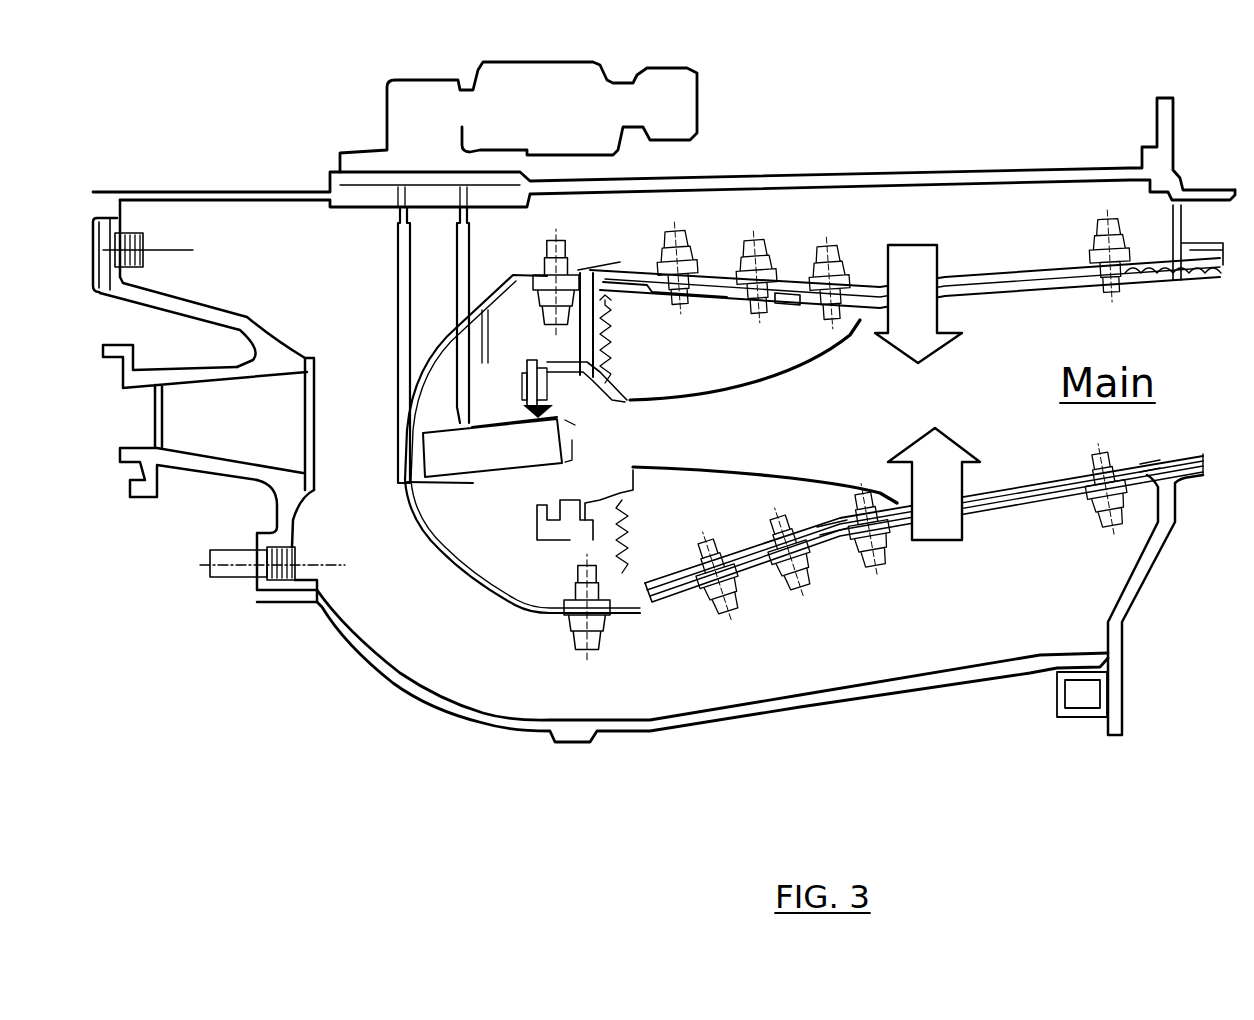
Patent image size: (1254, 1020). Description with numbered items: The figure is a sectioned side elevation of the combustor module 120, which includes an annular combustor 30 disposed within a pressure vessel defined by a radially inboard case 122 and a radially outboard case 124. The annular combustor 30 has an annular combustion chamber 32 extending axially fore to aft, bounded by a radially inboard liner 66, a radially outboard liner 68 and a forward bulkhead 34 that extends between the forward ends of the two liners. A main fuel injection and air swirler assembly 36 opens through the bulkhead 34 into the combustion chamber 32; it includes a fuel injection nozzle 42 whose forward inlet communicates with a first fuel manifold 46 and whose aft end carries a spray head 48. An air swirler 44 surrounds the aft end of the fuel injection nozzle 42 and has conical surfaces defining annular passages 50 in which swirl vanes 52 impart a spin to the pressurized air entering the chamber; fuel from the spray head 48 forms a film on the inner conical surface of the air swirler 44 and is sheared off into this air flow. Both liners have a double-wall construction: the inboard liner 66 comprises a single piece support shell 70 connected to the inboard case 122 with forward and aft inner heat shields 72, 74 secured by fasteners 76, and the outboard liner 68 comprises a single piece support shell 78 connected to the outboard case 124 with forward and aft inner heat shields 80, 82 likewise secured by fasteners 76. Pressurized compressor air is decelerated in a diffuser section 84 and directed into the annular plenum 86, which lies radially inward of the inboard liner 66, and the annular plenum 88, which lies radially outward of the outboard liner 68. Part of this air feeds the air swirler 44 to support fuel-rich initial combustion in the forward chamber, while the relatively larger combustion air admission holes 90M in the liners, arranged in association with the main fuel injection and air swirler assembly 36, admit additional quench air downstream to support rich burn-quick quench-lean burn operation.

The annular combustor 30 is at (1003, 558).
The annular combustion chamber 32 is at (854, 426).
The bulkhead 34 is at (603, 538).
The main fuel injection and air swirler assembly 36 is at (522, 505).
The fuel injection nozzle 42 is at (497, 478).
The air swirler 44 is at (635, 492).
The first fuel manifold 46 is at (385, 122).
The spray head 48 is at (570, 422).
The annular passages 50 is at (527, 388).
The swirl vanes 52 is at (553, 360).
The radially inboard liner 66 is at (840, 542).
The radially outboard liner 68 is at (793, 287).
The support shell 70 is at (1013, 507).
The forward inner heat shield 72 is at (737, 552).
The aft inner heat shield 74 is at (1147, 463).
The fasteners 76 is at (690, 250).
The support shell 78 is at (990, 275).
The forward inner heat shield 80 is at (725, 297).
The aft inner heat shield 82 is at (1033, 290).
The diffuser section 84 is at (217, 473).
The annular plenum 86 is at (871, 657).
The annular plenum 88 is at (1018, 224).
The relatively larger combustion air admission holes 90M is at (940, 300).
The combustor module 120 is at (877, 81).
The radially inboard case 122 is at (725, 723).
The radially outboard case 124 is at (1050, 170).